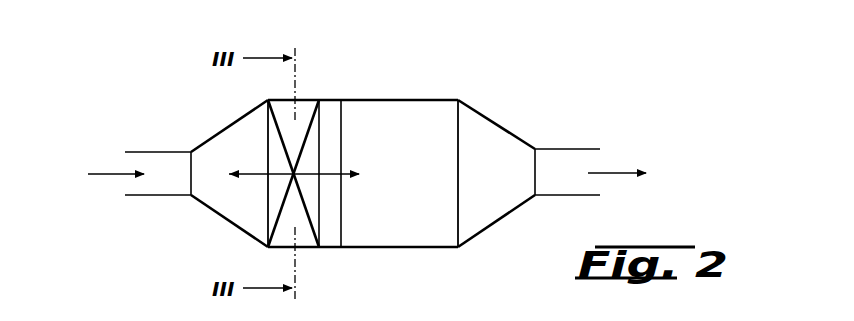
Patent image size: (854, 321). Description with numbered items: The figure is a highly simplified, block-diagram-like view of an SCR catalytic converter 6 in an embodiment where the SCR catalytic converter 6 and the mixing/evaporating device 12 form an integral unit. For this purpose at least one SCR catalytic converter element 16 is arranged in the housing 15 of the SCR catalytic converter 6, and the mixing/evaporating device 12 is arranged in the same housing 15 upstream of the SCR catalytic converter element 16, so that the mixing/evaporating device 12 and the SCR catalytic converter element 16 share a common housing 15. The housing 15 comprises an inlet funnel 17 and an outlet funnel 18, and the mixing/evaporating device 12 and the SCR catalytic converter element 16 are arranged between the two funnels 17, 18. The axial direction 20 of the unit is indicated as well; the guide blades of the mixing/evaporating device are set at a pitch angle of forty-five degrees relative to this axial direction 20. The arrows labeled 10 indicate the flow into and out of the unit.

The SCR catalytic converter 6 is at (492, 111).
The exhaust gas flow 10 is at (367, 175).
The mixing/evaporating device 12 is at (314, 207).
The housing 15 is at (354, 98).
The SCR catalytic converter element 16 is at (417, 185).
The inlet funnel 17 is at (223, 223).
The outlet funnel 18 is at (506, 219).
The axial direction 20 is at (253, 168).